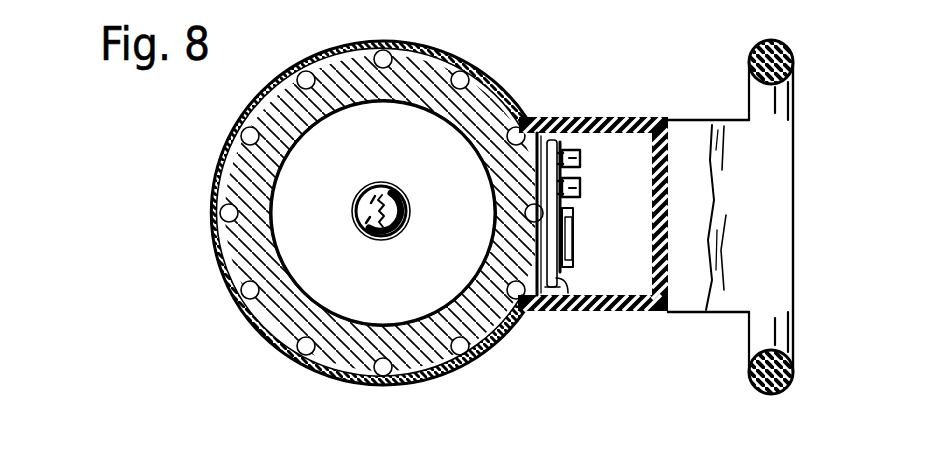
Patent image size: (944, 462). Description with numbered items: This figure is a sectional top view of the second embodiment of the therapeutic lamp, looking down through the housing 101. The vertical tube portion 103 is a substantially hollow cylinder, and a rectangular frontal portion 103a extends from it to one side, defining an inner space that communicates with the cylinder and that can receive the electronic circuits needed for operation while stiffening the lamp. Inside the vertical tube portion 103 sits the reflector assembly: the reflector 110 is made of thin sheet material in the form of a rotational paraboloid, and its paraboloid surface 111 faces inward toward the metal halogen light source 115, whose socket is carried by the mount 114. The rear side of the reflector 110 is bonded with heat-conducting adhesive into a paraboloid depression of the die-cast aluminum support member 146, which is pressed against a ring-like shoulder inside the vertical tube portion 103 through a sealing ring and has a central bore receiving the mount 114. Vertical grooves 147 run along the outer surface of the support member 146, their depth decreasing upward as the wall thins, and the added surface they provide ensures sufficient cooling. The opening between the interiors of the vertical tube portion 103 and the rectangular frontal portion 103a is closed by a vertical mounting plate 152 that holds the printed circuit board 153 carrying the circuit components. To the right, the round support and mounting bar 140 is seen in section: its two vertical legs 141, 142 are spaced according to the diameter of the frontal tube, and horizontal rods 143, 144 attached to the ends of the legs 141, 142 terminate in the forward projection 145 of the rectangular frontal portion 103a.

The housing 101 is at (516, 57).
The vertical tube portion 103 is at (272, 78).
The rectangular frontal portion 103a is at (597, 117).
The reflector 110 is at (370, 323).
The paraboloid surface 111 is at (272, 196).
The mount 114 is at (410, 212).
The metal halogen light source 115 is at (388, 200).
The support and mounting bar 140 is at (761, 202).
The vertical leg 141 is at (789, 371).
The vertical leg 142 is at (783, 42).
The horizontal rod 143 is at (758, 337).
The horizontal rod 144 is at (750, 93).
The forward projection 145 is at (794, 197).
The support member 146 is at (232, 256).
The vertical grooves 147 is at (230, 208).
The vertical mounting plate 152 is at (539, 297).
The printed circuit board 153 is at (567, 296).